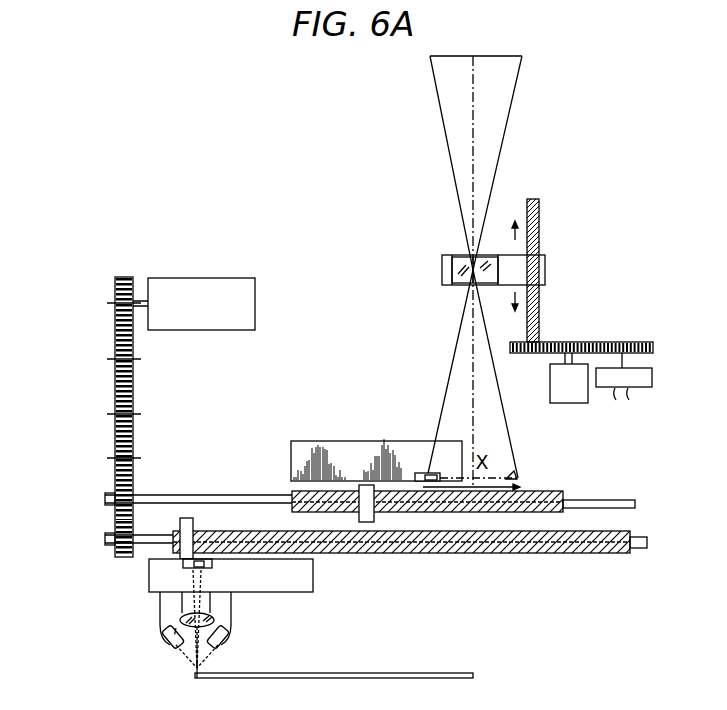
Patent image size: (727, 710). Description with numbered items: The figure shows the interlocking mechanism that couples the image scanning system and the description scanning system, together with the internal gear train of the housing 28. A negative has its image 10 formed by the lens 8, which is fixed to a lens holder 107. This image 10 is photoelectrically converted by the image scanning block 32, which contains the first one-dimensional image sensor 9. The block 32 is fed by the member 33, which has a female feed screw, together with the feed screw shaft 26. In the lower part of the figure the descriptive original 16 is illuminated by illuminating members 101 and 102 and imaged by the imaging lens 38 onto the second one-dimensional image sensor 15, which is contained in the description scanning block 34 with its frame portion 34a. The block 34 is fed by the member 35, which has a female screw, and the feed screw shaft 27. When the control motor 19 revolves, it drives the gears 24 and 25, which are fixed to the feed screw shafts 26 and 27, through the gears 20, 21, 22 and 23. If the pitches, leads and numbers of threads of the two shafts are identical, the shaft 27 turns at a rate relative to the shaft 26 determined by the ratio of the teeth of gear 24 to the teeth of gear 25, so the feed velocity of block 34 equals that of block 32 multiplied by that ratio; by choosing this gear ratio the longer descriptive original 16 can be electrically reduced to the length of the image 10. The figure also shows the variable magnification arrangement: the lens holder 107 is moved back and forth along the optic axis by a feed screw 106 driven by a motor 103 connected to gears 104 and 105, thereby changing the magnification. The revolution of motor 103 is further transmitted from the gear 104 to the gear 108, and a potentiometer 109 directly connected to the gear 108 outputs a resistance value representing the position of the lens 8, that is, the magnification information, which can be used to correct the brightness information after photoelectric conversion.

The lens 8 is at (460, 258).
The first one-dimensional image sensor 9 is at (420, 473).
The image 10 is at (514, 472).
The second one-dimensional image sensor 15 is at (212, 563).
The descriptive original 16 is at (360, 672).
The control motor 19 is at (202, 277).
The gear 20 is at (115, 292).
The gear 21 is at (115, 347).
The gear 22 is at (115, 416).
The gear 23 is at (115, 462).
The gear 24 is at (115, 508).
The gear 25 is at (115, 550).
The feed screw shaft 26 is at (600, 500).
The feed screw shaft 27 is at (590, 554).
The housing 28 is at (85, 388).
The image scanning block 32 is at (362, 440).
The member having a female screw 33 is at (375, 522).
The description scanning block 34 is at (313, 577).
The head frame 34a is at (231, 609).
The member having a female screw 35 is at (194, 522).
The imaging lens 38 is at (180, 619).
The illuminating member 101 is at (172, 647).
The illuminating member 102 is at (222, 645).
The motor 103 is at (565, 404).
The gear 104 is at (567, 352).
The gear 105 is at (533, 355).
The feed screw 106 is at (540, 223).
The lens holder 107 is at (525, 268).
The gear 108 is at (623, 352).
The potentiometer 109 is at (652, 380).